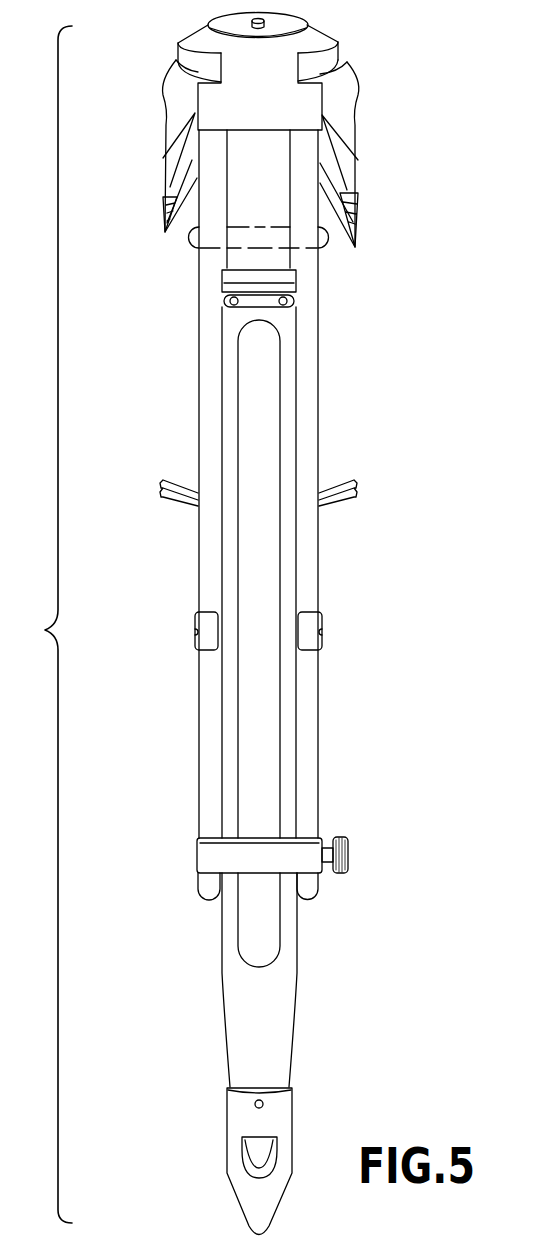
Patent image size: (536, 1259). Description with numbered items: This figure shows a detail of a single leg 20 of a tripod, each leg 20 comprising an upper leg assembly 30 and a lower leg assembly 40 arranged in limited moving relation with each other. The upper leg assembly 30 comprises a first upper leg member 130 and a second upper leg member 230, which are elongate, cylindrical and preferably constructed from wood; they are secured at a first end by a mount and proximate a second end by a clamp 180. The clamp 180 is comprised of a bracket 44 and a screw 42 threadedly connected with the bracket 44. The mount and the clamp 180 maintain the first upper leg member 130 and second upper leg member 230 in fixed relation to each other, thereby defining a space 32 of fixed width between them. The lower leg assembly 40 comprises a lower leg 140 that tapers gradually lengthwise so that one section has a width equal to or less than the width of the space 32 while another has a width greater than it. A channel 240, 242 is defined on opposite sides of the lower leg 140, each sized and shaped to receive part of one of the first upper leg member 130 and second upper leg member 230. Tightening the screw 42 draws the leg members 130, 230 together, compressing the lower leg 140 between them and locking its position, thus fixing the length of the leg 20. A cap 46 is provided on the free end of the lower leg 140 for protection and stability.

The leg 20 is at (41, 624).
The upper leg assembly 30 is at (345, 228).
The space 32 is at (259, 218).
The first upper leg member 130 is at (207, 338).
The second upper leg member 230 is at (319, 572).
The lower leg 140 is at (285, 478).
The clamp 180 is at (277, 847).
The screw 42 is at (350, 852).
The bracket 44 is at (197, 870).
The channel 240 is at (298, 913).
The channel 242 is at (227, 932).
The lower leg assembly 40 is at (254, 1054).
The cap 46 is at (228, 1135).